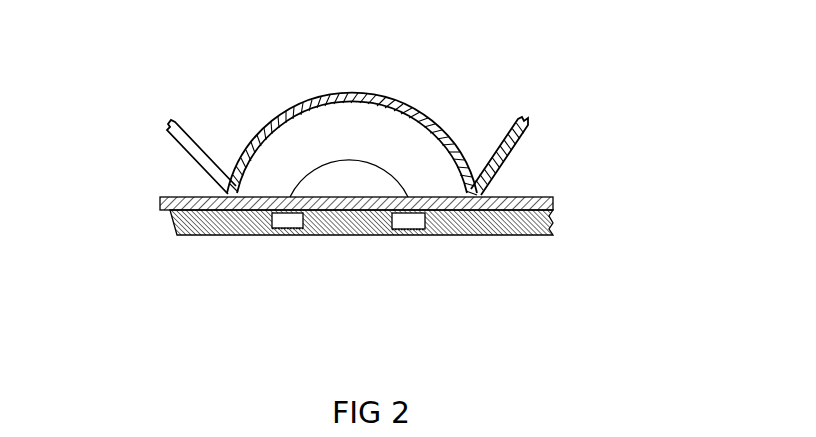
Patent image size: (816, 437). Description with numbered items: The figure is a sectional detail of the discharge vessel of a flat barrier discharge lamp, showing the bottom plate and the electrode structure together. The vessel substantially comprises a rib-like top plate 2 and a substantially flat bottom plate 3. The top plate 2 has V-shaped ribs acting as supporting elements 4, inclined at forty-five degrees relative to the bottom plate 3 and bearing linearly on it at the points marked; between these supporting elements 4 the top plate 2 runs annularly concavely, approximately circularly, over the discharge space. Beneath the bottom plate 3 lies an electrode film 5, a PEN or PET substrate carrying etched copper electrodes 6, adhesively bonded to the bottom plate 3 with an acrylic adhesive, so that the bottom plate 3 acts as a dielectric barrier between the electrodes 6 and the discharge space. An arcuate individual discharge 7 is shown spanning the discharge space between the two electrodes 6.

The top plate 2 is at (383, 100).
The bottom plate 3 is at (555, 203).
The supporting elements 4 is at (475, 199).
The electrode film 5 is at (172, 222).
The copper electrodes 6 is at (288, 218).
The individual discharge 7 is at (330, 163).